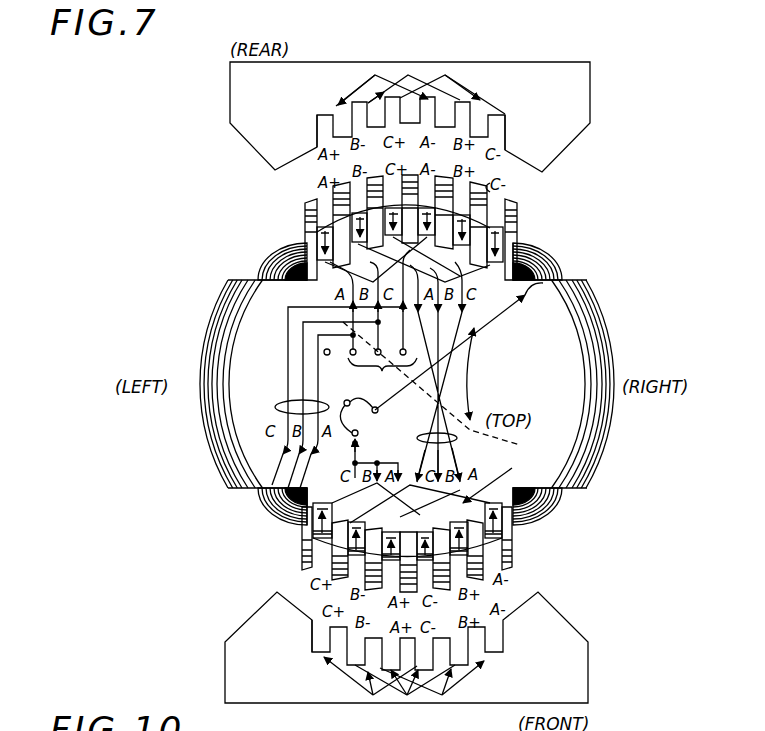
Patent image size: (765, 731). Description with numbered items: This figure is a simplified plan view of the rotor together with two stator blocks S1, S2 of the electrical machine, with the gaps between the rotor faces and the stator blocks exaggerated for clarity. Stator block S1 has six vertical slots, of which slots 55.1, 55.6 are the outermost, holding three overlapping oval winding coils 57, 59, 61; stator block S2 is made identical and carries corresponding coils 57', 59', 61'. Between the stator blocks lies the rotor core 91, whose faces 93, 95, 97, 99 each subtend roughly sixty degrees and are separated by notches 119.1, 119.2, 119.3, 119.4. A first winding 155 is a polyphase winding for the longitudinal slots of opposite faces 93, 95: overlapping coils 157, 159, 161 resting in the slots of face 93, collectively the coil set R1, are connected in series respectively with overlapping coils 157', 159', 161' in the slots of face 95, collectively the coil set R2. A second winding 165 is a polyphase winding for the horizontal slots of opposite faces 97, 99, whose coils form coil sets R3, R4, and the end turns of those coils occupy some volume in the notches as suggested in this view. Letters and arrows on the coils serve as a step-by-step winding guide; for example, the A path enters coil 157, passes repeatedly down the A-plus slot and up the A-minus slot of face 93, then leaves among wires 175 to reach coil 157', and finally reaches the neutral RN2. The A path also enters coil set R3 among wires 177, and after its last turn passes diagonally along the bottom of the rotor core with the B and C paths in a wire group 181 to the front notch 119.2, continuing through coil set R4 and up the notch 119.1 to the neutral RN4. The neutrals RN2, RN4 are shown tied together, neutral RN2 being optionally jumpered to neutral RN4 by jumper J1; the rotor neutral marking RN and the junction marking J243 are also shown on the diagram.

The stator block S1 is at (308, 90).
The stator block S2 is at (548, 656).
The coil set R1 is at (342, 232).
The coil set R2 is at (513, 564).
The coil set R3 is at (266, 503).
The coil set R4 is at (541, 278).
The vertical slot 55.1 is at (317, 116).
The vertical slot 55.6 is at (505, 129).
The winding coil 57 is at (378, 65).
The winding coil 59 is at (414, 64).
The winding coil 61 is at (458, 74).
The winding coil 57' is at (459, 678).
The winding coil 59' is at (425, 687).
The winding coil 61' is at (356, 677).
The rotor face 93 is at (491, 183).
The rotor face 95 is at (338, 582).
The rotor face 97 is at (612, 361).
The rotor face 99 is at (200, 353).
The notch 119.1 is at (518, 253).
The notch 119.2 is at (525, 522).
The notch 119.3 is at (285, 532).
The notch 119.4 is at (303, 250).
The first winding 155 is at (495, 374).
The coil 157 is at (356, 272).
The coil 159 is at (415, 263).
The coil 161 is at (418, 259).
The coil 157' is at (420, 508).
The coil 159' is at (376, 502).
The coil 161' is at (385, 390).
The second winding 165 is at (256, 262).
The wires 175 is at (458, 440).
The wires 177 is at (276, 406).
The wire group 181 is at (450, 389).
The rotor core 91 is at (563, 393).
The rotor neutral terminal RN is at (339, 375).
The neutral RN2 is at (362, 458).
The neutral RN4 is at (377, 413).
The jumper J1 is at (351, 425).
The junction terminals J243 is at (381, 376).